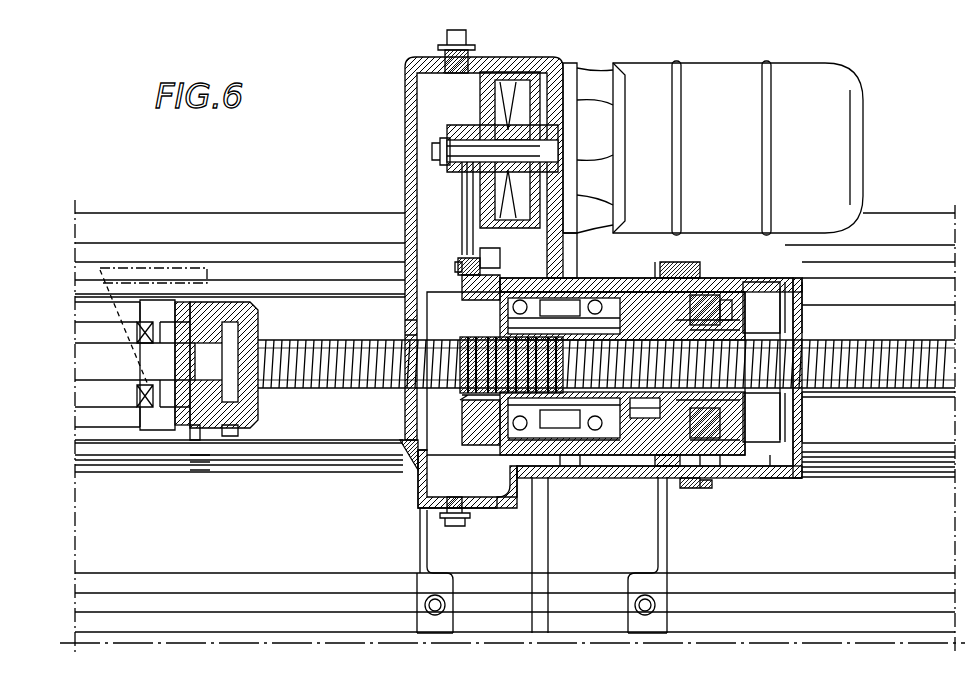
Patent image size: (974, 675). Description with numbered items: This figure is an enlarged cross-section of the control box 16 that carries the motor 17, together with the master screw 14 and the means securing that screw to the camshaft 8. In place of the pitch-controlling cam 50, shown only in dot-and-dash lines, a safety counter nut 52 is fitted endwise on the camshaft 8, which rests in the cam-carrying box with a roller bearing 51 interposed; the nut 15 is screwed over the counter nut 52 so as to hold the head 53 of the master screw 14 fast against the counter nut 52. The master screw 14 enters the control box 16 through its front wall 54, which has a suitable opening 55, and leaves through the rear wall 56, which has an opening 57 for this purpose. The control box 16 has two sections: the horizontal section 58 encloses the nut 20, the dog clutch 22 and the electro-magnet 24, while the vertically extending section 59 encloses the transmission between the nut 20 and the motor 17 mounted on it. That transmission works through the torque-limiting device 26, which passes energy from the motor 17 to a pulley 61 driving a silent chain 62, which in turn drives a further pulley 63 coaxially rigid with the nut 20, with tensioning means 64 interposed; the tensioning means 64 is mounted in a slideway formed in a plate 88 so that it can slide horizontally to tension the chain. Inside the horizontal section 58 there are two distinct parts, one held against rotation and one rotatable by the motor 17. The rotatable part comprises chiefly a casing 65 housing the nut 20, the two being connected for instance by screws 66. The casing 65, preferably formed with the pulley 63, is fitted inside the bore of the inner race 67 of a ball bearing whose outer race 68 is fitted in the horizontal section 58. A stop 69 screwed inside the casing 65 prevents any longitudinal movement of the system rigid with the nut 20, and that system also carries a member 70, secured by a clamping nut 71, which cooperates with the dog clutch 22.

The camshaft 8 is at (92, 363).
The master screw 14 is at (322, 390).
The nut 15 is at (244, 305).
The control box 16 is at (778, 480).
The motor 17 is at (835, 86).
The nut 20 is at (462, 394).
The dog clutch 22 is at (690, 462).
The electro-magnet 24 is at (720, 283).
The torque-limiting device 26 is at (570, 68).
The pitch-controlling cam 50 is at (108, 289).
The roller bearing 51 is at (138, 400).
The safety counter nut 52 is at (184, 302).
The head 53 is at (232, 428).
The front wall 54 is at (405, 163).
The opening 55 is at (410, 330).
The rear wall 56 is at (803, 320).
The opening 57 is at (804, 413).
The horizontal section 58 is at (615, 293).
The vertically extending section 59 is at (525, 63).
The pulley 61 is at (468, 135).
The silent chain 62 is at (463, 220).
The pulley 63 is at (402, 462).
The tensioning means 64 is at (463, 275).
The casing 65 is at (580, 294).
The screws 66 is at (490, 433).
The inner race 67 is at (558, 446).
The outer race 68 is at (505, 508).
The stop 69 is at (610, 446).
The member 70 is at (642, 442).
The clamping nut 71 is at (688, 265).
The plate 88 is at (487, 252).